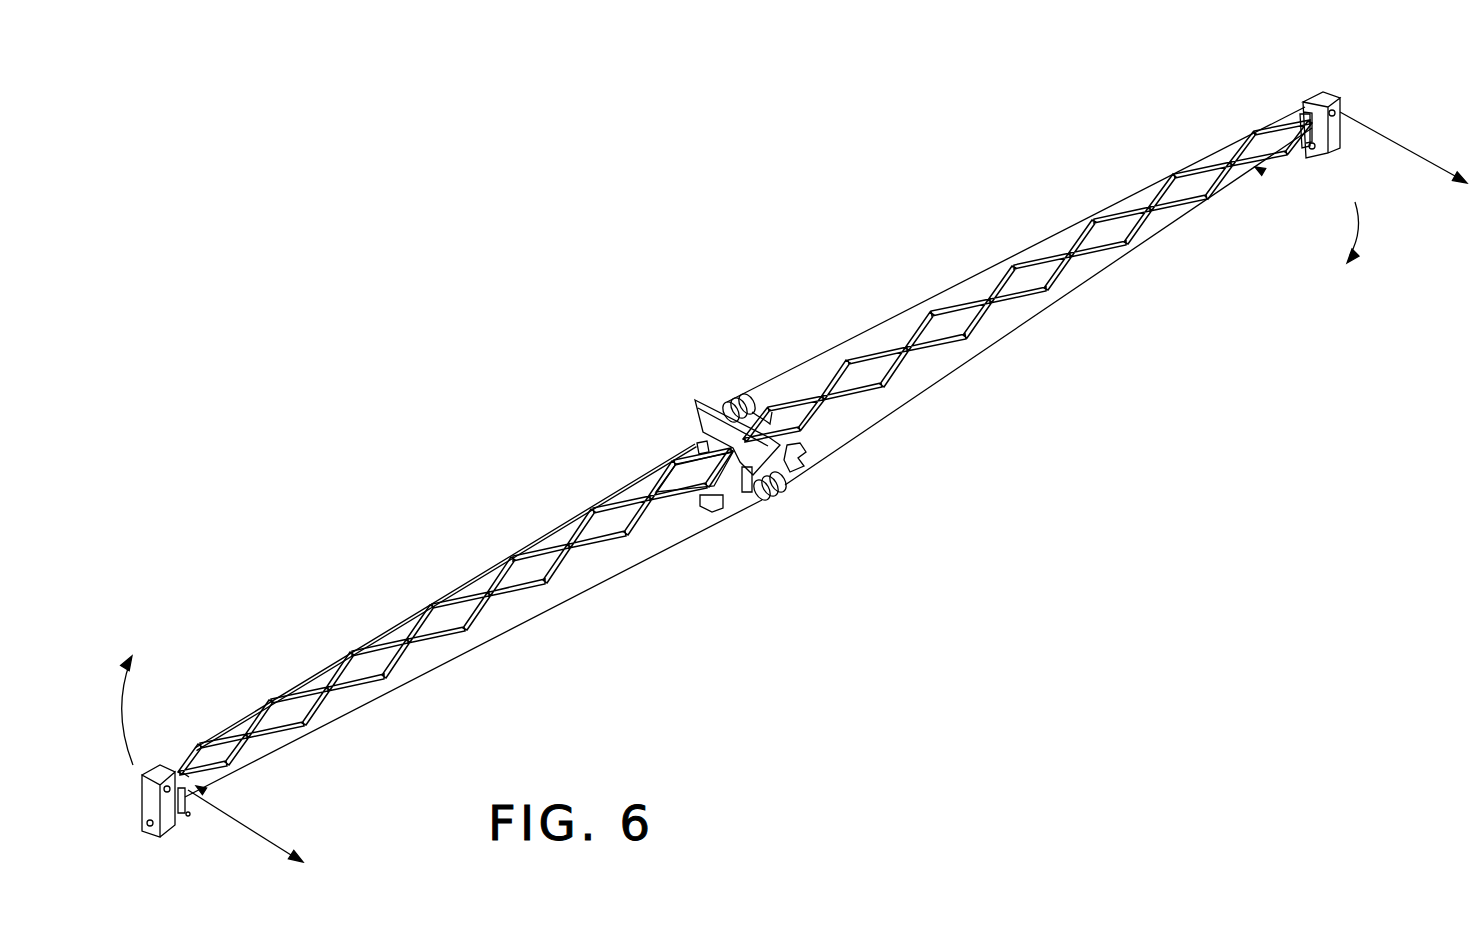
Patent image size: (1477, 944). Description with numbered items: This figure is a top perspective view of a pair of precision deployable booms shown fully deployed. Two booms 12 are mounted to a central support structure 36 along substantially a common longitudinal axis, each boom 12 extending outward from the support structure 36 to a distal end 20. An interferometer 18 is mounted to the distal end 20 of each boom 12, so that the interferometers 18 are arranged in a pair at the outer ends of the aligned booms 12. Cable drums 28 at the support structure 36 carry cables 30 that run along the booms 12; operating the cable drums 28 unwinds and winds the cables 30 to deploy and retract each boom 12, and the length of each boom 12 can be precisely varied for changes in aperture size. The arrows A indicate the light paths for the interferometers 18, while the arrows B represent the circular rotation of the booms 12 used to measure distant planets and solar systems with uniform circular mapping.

The boom 12 is at (980, 333).
The interferometer 18 is at (167, 832).
The distal end 20 is at (176, 775).
The cable drum 28 is at (726, 398).
The cable 30 is at (1098, 225).
The support structure 36 is at (697, 398).
The arrows A is at (243, 825).
The arrows B is at (141, 686).